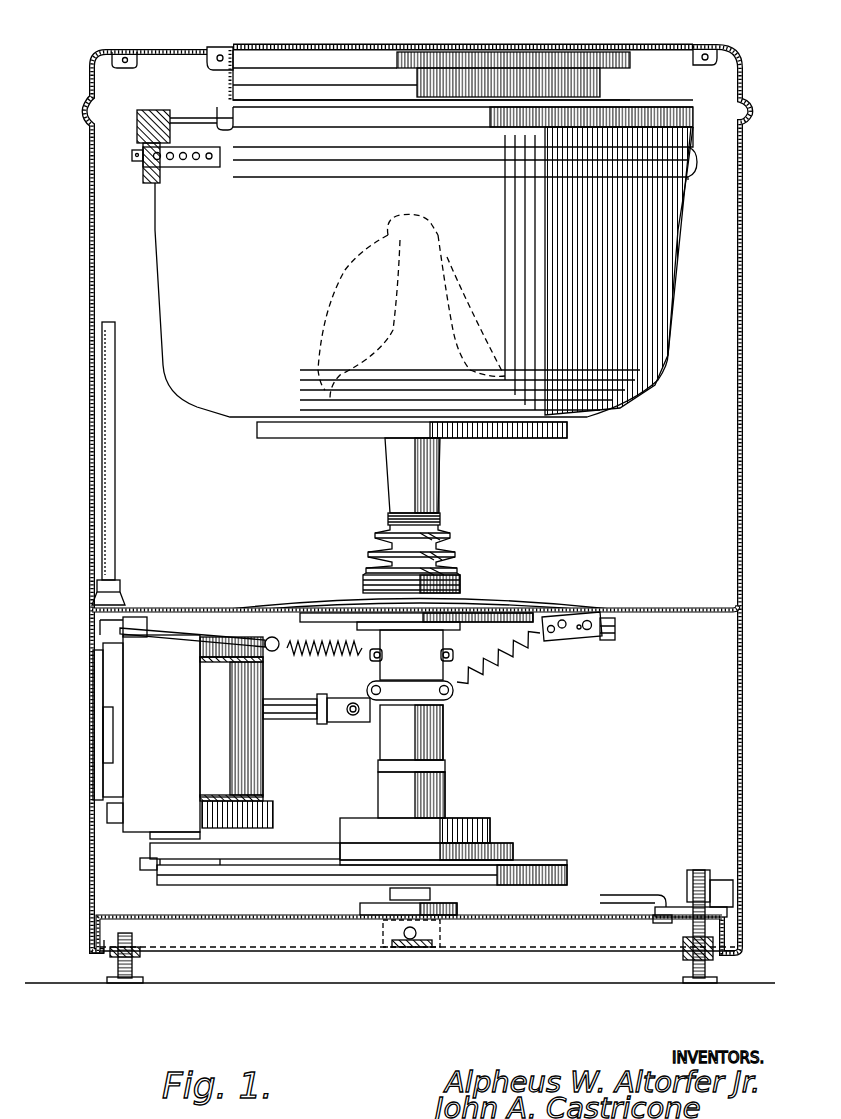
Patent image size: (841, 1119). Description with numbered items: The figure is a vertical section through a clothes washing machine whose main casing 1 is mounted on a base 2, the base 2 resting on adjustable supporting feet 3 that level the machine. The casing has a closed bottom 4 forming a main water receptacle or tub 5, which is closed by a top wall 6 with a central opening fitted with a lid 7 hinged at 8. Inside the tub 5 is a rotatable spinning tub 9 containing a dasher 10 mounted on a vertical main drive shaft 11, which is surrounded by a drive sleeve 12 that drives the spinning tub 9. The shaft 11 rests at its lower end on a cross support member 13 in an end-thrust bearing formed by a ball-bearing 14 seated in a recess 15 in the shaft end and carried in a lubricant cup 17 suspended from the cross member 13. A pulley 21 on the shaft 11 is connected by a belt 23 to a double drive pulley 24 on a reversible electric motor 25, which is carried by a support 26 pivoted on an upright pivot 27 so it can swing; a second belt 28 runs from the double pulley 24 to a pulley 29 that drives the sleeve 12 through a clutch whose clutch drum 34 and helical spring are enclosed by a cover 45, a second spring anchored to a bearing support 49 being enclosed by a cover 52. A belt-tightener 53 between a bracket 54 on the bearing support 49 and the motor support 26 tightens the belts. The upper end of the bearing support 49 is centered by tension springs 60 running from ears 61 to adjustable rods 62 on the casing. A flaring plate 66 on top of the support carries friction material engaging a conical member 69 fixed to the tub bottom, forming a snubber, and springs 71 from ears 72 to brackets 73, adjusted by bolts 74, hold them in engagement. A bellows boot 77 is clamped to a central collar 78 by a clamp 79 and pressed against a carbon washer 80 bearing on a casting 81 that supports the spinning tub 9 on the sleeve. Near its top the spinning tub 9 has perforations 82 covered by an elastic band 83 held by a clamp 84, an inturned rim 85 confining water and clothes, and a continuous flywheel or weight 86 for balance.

The main casing 1 is at (742, 760).
The base 2 is at (88, 888).
The supporting feet 3 is at (140, 965).
The closed bottom 4 is at (675, 612).
The main water receptacle or tub 5 is at (672, 499).
The top wall 6 is at (120, 52).
The lid 7 is at (530, 47).
The hinge 8 is at (630, 52).
The spinning tub 9 is at (668, 358).
The dasher 10 is at (386, 226).
The main drive shaft 11 is at (240, 707).
The drive sleeve 12 is at (385, 770).
The cross support member 13 is at (560, 950).
The ball-bearing 14 is at (395, 934).
The recess 15 is at (440, 930).
The cup 17 is at (432, 948).
The pulley 21 is at (545, 866).
The belt 23 is at (247, 871).
The double drive pulley 24 is at (155, 862).
The electric motor 25 is at (265, 760).
The motor support 26 is at (172, 729).
The upright pivot 27 is at (103, 748).
The belt 28 is at (270, 845).
The pulley 29 is at (513, 845).
The clutch drum 34 is at (490, 818).
The cover 45 is at (380, 790).
The bearing support 49 is at (445, 735).
The cover 52 is at (447, 766).
The belt-tightener 53 is at (288, 722).
The bracket 54 is at (343, 724).
The coiled springs 60 is at (335, 681).
The ears 61 is at (402, 682).
The rods or bolts 62 is at (270, 637).
The flaring plate 66 is at (503, 655).
The cone member 69 is at (533, 607).
The coiled springs 71 is at (462, 686).
The ears 72 is at (450, 702).
The brackets 73 is at (567, 637).
The bolts 74 is at (615, 640).
The flexible boot 77 is at (372, 552).
The central collar 78 is at (365, 590).
The clamp 79 is at (460, 585).
The washer 80 is at (440, 517).
The casting 81 is at (498, 440).
The perforations 82 is at (170, 160).
The elastic band 83 is at (697, 160).
The clamp 84 is at (132, 156).
The rim 85 is at (235, 125).
The flywheel or weight 86 is at (160, 110).